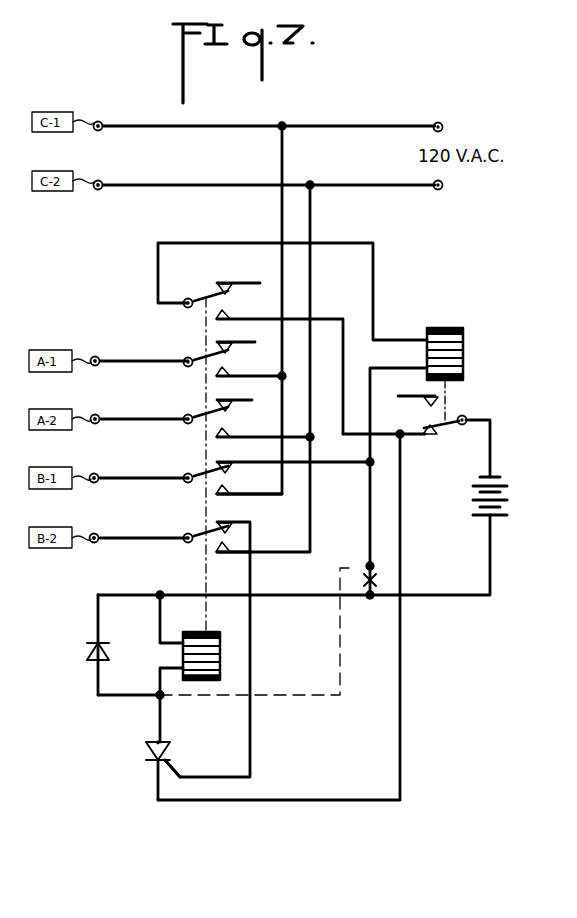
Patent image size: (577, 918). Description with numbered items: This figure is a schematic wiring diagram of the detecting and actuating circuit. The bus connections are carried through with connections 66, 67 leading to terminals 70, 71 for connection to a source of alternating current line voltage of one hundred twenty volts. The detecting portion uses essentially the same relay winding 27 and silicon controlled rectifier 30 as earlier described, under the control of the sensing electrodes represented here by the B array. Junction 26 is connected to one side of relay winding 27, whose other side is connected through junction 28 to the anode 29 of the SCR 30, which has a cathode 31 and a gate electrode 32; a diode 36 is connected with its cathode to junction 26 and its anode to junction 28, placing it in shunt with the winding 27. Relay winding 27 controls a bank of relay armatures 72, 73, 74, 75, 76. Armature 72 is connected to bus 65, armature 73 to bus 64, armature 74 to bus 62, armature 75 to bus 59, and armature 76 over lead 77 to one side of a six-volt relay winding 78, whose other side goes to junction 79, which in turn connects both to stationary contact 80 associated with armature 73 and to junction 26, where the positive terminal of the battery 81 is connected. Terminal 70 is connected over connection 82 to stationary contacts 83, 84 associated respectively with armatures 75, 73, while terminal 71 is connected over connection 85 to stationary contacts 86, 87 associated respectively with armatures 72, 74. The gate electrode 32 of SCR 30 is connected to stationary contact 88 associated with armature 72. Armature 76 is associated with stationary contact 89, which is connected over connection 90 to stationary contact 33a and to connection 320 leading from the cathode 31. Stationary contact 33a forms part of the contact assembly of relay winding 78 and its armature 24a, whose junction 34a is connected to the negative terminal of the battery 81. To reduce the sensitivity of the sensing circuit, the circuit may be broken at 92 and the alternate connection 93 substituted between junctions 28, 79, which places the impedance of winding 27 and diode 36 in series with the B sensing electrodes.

The connection 66 is at (144, 125).
The connection 67 is at (144, 184).
The terminal 70 is at (443, 124).
The terminal 71 is at (443, 188).
The connection 82 is at (279, 213).
The connection 85 is at (313, 278).
The lead 77 is at (377, 280).
The relay armature 76 is at (203, 298).
The stationary contact 89 is at (233, 311).
The relay armature 75 is at (200, 356).
The bus 59 is at (145, 360).
The stationary contact 83 is at (233, 369).
The connection 90 is at (345, 374).
The relay winding 78 is at (466, 348).
The bus 62 is at (145, 418).
The relay armature 74 is at (197, 417).
The stationary contact 87 is at (232, 425).
The junction 34a is at (470, 416).
The bus 64 is at (145, 477).
The relay armature 73 is at (197, 475).
The stationary contact 80 is at (232, 460).
The armature 24a is at (447, 425).
The stationary contact 33a is at (430, 441).
The stationary contact 84 is at (232, 488).
The battery 81 is at (508, 494).
The junction 79 is at (365, 468).
The bus 65 is at (145, 536).
The relay armature 72 is at (197, 534).
The stationary contact 88 is at (240, 520).
The stationary contact 86 is at (223, 556).
The junction 26 is at (160, 592).
The circuit break point 92 is at (380, 580).
The relay winding 27 is at (219, 640).
The alternate connection 93 is at (340, 652).
The diode 36 is at (86, 650).
The junction 28 is at (155, 700).
The anode 29 is at (166, 742).
The silicon controlled rectifier 30 is at (145, 748).
The cathode 31 is at (152, 764).
The gate electrode 32 is at (182, 770).
The connection 320 is at (402, 722).